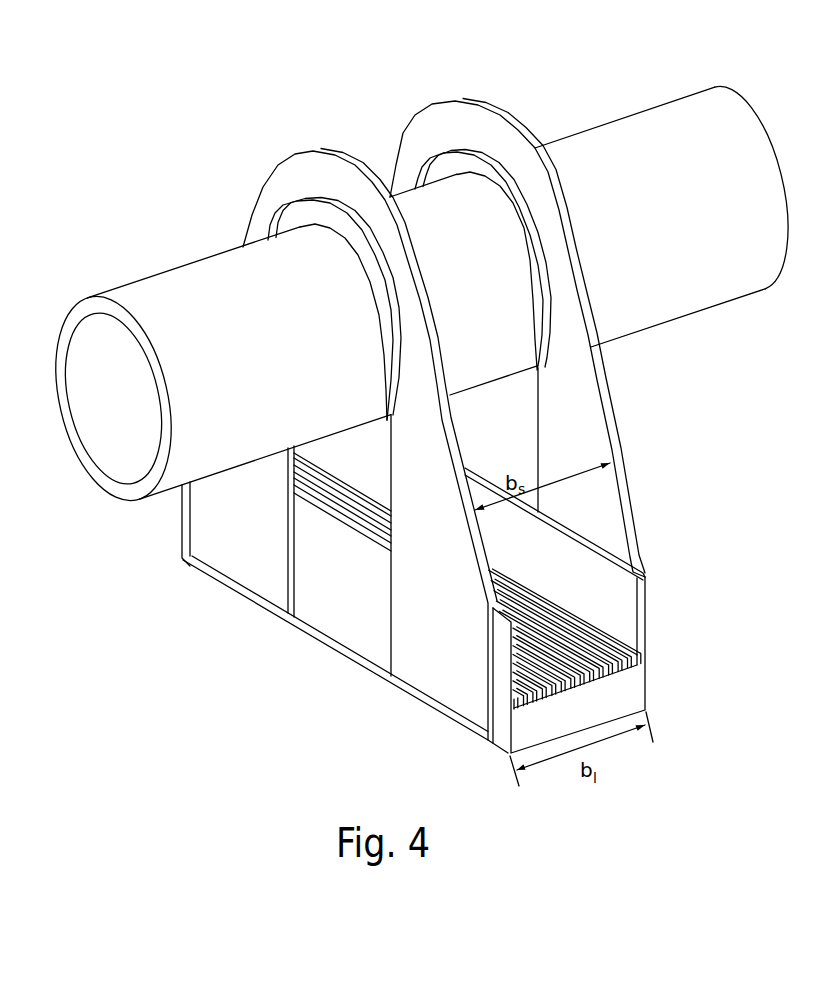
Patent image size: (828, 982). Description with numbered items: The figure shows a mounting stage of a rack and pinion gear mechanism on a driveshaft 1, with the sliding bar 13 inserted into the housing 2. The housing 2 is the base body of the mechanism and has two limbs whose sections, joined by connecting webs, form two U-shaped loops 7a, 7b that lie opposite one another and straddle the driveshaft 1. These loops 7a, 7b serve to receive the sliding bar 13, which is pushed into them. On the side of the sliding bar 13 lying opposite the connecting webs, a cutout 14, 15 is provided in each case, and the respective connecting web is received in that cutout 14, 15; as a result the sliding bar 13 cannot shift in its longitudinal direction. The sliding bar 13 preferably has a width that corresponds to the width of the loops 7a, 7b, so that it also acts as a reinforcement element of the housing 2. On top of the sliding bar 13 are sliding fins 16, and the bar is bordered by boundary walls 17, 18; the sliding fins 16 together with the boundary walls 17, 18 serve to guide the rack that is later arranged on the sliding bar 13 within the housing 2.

The driveshaft 1 is at (667, 127).
The housing 2 is at (436, 452).
The U-shaped loop 7a is at (236, 602).
The U-shaped loop 7b is at (437, 722).
The sliding bar 13 is at (631, 688).
The cutout 14 is at (400, 688).
The cutout 15 is at (203, 567).
The sliding fins 16 is at (630, 641).
The boundary wall 17 is at (358, 601).
The boundary wall 18 is at (645, 594).